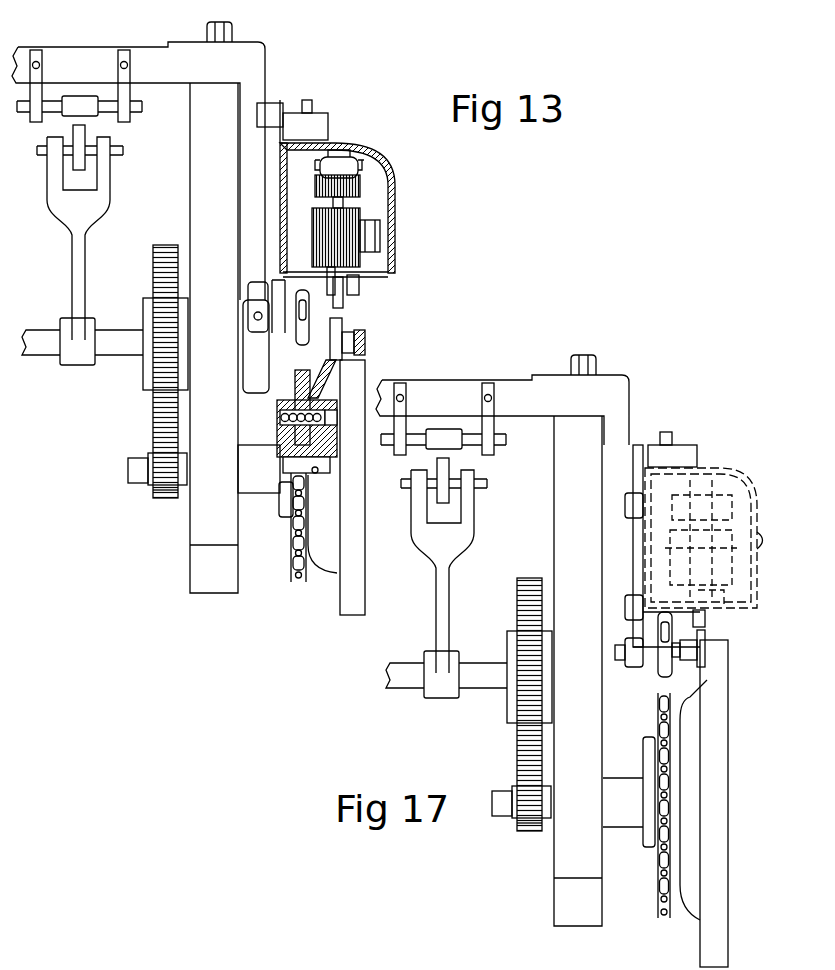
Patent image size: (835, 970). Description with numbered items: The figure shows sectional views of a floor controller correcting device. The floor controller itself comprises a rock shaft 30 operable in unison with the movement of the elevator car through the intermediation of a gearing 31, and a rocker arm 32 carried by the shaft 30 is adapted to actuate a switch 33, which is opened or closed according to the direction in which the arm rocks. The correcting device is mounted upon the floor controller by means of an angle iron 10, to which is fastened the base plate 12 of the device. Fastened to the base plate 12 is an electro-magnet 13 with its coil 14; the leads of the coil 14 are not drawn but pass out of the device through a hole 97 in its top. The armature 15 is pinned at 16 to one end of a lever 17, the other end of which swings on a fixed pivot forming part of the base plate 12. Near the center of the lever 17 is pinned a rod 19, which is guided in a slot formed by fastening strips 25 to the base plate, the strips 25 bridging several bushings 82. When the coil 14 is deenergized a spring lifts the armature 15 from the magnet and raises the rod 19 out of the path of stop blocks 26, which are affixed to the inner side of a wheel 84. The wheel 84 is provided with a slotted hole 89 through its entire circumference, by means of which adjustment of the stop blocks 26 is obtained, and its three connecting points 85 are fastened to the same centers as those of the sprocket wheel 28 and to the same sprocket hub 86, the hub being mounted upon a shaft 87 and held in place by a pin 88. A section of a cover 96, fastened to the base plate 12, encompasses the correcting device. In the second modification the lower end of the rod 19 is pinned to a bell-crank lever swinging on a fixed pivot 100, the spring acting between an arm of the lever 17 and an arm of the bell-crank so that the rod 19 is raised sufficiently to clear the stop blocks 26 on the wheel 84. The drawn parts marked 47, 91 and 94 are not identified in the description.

In FIG. 13, the angle iron 10 is at (273, 72).
In FIG. 17, the angle iron 10 is at (502, 640).
In FIG. 13, the base plate 12 is at (283, 188).
In FIG. 17, the base plate 12 is at (655, 540).
In FIG. 13, the electro-magnet 13 is at (362, 248).
In FIG. 13, the coil 14 is at (382, 232).
In FIG. 13, the armature 15 is at (362, 187).
In FIG. 13, the pin 16 is at (368, 167).
In FIG. 13, the lever 17 is at (347, 160).
In FIG. 13, the rod 19 is at (343, 204).
In FIG. 17, the rod 19 is at (706, 618).
In FIG. 13, the strips 25 is at (360, 283).
In FIG. 13, the stop blocks 26 is at (343, 325).
In FIG. 17, the stop blocks 26 is at (706, 640).
In FIG. 13, the sprocket wheel 28 is at (296, 582).
In FIG. 17, the sprocket wheel 28 is at (655, 890).
In FIG. 13, the rock shaft 30 is at (120, 345).
In FIG. 17, the rock shaft 30 is at (438, 692).
In FIG. 13, the gearing 31 is at (148, 412).
In FIG. 13, the rocker arm 32 is at (95, 205).
In FIG. 17, the rocker arm 32 is at (458, 554).
In FIG. 13, the switch 33 is at (91, 86).
In FIG. 17, the switch 33 is at (453, 419).
In FIG. 13, the pivot plate 47 is at (256, 358).
In FIG. 13, the bushings 82 is at (345, 293).
In FIG. 13, the wheel 84 is at (350, 605).
In FIG. 17, the wheel 84 is at (712, 773).
In FIG. 13, the connecting points 85 is at (283, 417).
In FIG. 13, the sprocket hub 86 is at (285, 507).
In FIG. 17, the sprocket hub 86 is at (650, 760).
In FIG. 13, the shaft 87 is at (138, 477).
In FIG. 17, the shaft 87 is at (487, 824).
In FIG. 13, the pin 88 is at (318, 472).
In FIG. 13, the slotted hole 89 is at (366, 340).
In FIG. 13, the bracket 91 is at (258, 290).
In FIG. 13, the lever 94 is at (293, 330).
In FIG. 17, the lever 94 is at (663, 680).
In FIG. 13, the cover 96 is at (397, 197).
In FIG. 17, the cover 96 is at (745, 520).
In FIG. 13, the hole 97 is at (312, 122).
In FIG. 17, the hole 97 is at (672, 449).
In FIG. 17, the fixed pivot 100 is at (623, 606).